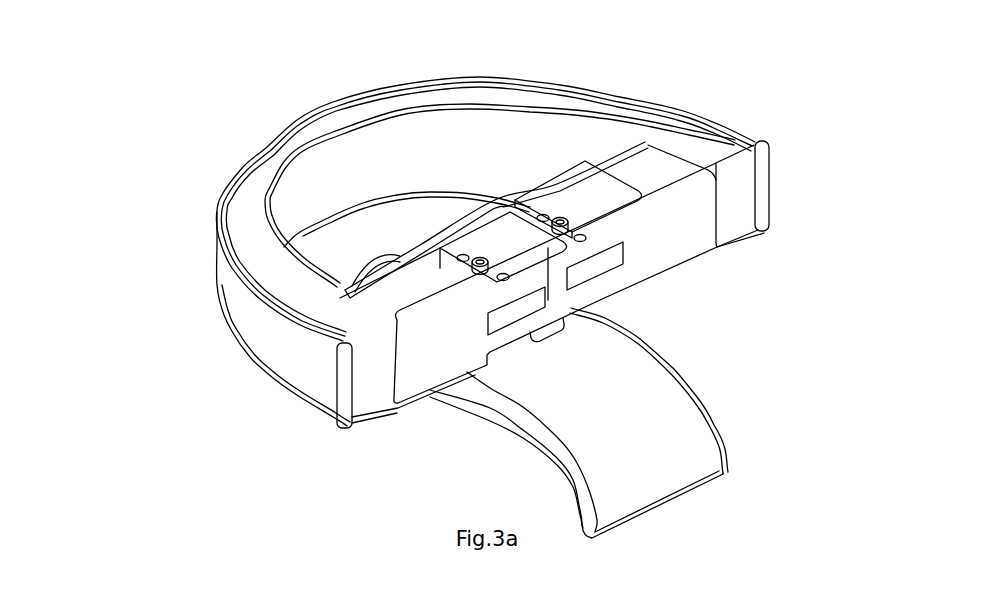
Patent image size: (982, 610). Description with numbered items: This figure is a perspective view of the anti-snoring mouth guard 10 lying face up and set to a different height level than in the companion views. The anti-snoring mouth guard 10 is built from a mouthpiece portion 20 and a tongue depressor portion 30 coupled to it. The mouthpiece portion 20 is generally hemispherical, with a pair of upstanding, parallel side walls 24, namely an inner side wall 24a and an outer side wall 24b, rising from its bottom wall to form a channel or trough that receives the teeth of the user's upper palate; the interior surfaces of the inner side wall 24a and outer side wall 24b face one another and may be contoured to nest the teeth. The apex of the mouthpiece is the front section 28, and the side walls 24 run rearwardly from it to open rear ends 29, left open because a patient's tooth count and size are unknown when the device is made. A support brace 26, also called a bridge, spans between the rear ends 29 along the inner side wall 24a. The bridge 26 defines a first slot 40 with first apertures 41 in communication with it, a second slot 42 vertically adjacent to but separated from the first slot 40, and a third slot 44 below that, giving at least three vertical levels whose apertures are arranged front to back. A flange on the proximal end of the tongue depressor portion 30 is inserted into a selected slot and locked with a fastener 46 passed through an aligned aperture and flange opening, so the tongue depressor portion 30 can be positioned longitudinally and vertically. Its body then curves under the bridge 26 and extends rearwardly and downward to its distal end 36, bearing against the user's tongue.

The anti-snoring mouth guard 10 is at (468, 253).
The mouthpiece portion 20 is at (484, 253).
The side walls 24 is at (484, 253).
The inner side wall 24a is at (304, 192).
The outer side wall 24b is at (245, 204).
The support brace 26 is at (693, 207).
The front section 28 is at (297, 117).
The rear ends 29 is at (373, 420).
The tongue depressor portion 30 is at (610, 441).
The distal end 36 is at (668, 505).
The first slot 40 is at (553, 214).
The first apertures 41 is at (583, 234).
The second slot 42 is at (580, 171).
The third slot 44 is at (603, 303).
The fastener 46 is at (562, 217).